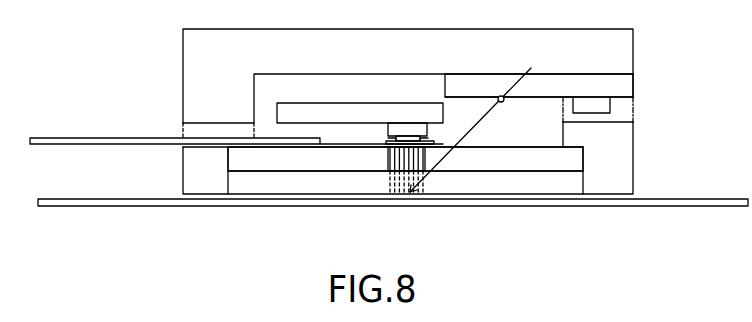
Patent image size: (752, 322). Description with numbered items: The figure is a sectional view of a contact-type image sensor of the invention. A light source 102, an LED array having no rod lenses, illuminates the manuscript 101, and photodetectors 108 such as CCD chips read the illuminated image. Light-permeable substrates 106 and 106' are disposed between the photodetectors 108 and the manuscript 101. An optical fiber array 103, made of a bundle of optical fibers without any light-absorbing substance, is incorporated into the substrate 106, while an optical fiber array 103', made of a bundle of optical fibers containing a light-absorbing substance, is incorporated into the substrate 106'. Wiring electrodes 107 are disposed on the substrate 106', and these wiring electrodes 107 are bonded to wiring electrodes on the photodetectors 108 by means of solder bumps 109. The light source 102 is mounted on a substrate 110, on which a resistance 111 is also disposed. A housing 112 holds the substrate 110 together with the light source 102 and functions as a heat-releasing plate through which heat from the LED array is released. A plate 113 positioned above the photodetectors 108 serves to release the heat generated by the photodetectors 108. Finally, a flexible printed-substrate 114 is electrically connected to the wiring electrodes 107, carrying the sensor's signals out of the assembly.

The manuscript 101 is at (115, 201).
The light source 102 is at (485, 123).
The optical fiber array 103 is at (400, 202).
The optical fiber array 103' is at (379, 195).
The light-permeable substrate 106 is at (405, 201).
The light-permeable substrate 106' is at (405, 199).
The wiring electrodes 107 is at (357, 150).
The photodetectors 108 is at (405, 128).
The solder bumps 109 is at (425, 139).
The substrate 110 is at (618, 87).
The resistance 111 is at (600, 108).
The housing 112 is at (193, 68).
The plate 113 is at (315, 112).
The flexible printed-substrate 114 is at (100, 138).